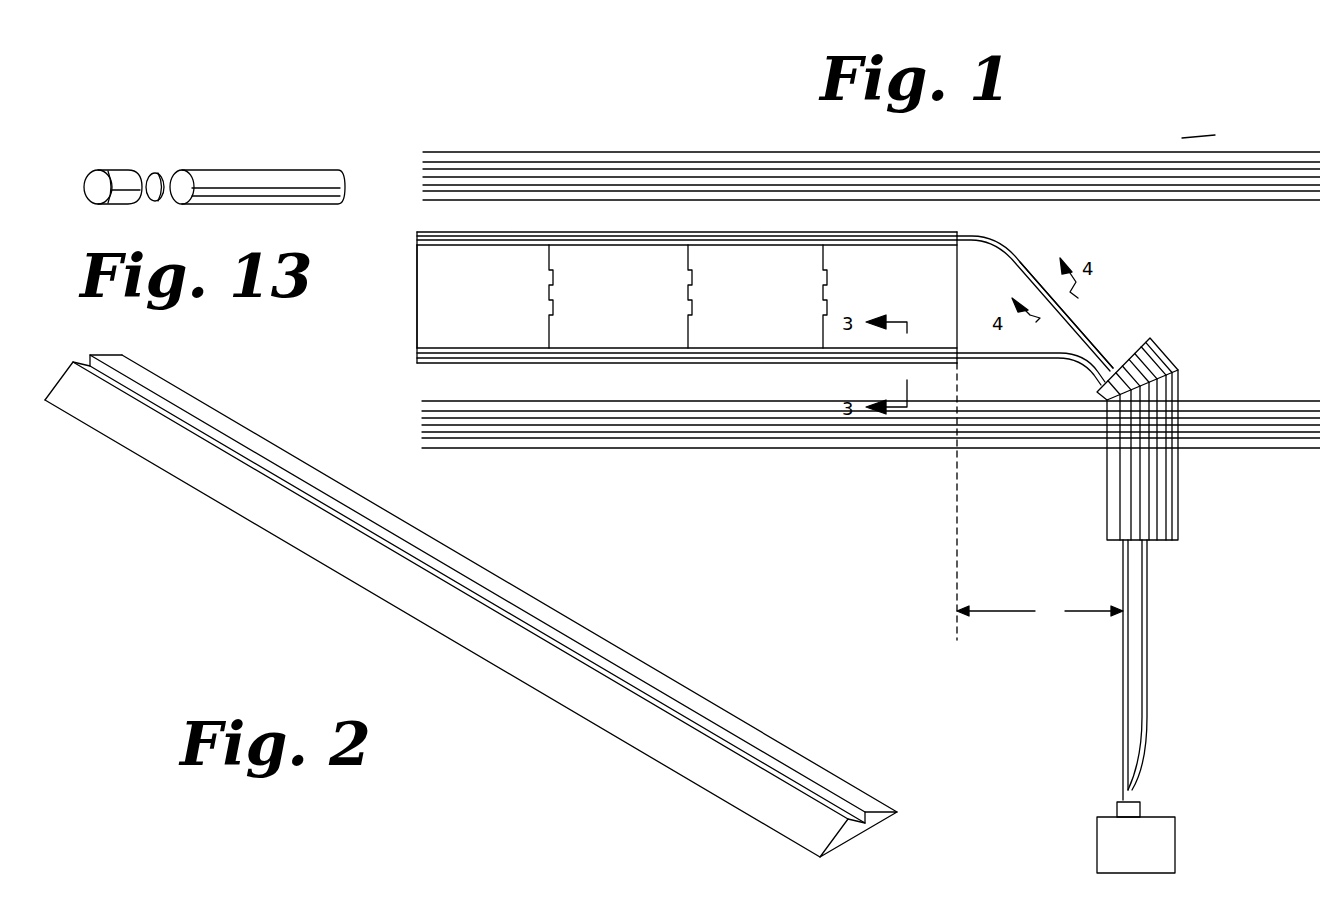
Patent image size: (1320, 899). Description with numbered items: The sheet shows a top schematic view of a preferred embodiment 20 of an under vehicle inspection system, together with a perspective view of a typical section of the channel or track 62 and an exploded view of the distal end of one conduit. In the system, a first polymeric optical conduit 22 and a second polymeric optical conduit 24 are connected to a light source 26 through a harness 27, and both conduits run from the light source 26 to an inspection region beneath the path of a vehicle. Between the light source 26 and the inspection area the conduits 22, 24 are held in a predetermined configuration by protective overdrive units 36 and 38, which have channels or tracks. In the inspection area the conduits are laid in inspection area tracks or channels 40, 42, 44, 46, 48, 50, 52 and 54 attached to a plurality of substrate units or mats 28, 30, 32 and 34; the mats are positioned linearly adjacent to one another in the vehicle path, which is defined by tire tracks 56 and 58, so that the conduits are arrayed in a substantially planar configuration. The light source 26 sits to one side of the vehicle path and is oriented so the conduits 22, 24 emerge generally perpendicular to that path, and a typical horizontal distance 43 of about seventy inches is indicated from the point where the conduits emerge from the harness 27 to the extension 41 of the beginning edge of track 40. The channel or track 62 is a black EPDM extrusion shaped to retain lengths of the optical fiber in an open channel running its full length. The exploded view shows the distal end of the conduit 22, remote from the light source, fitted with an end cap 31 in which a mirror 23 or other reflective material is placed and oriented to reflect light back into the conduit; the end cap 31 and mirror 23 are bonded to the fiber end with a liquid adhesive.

In FIG. 1, the under vehicle inspection system 20 is at (1182, 140).
In FIG. 13, the first polymeric optical conduit 22 is at (332, 178).
In FIG. 1, the first polymeric optical conduit 22 is at (1085, 328).
In FIG. 13, the mirror 23 is at (161, 172).
In FIG. 1, the second polymeric optical conduit 24 is at (1123, 680).
In FIG. 1, the light source 26 is at (1177, 840).
In FIG. 1, the harness 27 is at (1140, 806).
In FIG. 1, the substrate unit or mat 28 is at (890, 297).
In FIG. 1, the substrate unit or mat 30 is at (727, 296).
In FIG. 13, the end cap 31 is at (112, 170).
In FIG. 1, the substrate unit or mat 32 is at (593, 296).
In FIG. 1, the substrate unit or mat 34 is at (454, 296).
In FIG. 1, the protective overdrive unit 36 is at (1105, 455).
In FIG. 1, the protective overdrive unit 38 is at (1180, 372).
In FIG. 1, the inspection area track 40 is at (950, 362).
In FIG. 1, the extension of beginning edge of track 41 is at (955, 511).
In FIG. 1, the inspection area track 42 is at (920, 240).
In FIG. 1, the horizontal distance 43 is at (1040, 611).
In FIG. 1, the inspection area track 44 is at (810, 365).
In FIG. 1, the inspection area track 46 is at (810, 240).
In FIG. 1, the inspection area track 48 is at (627, 365).
In FIG. 1, the inspection area track 50 is at (630, 240).
In FIG. 1, the inspection area track 52 is at (417, 360).
In FIG. 1, the inspection area track 54 is at (417, 232).
In FIG. 1, the tire track 56 is at (470, 175).
In FIG. 1, the tire track 58 is at (545, 428).
In FIG. 2, the channel or track 62 is at (600, 638).